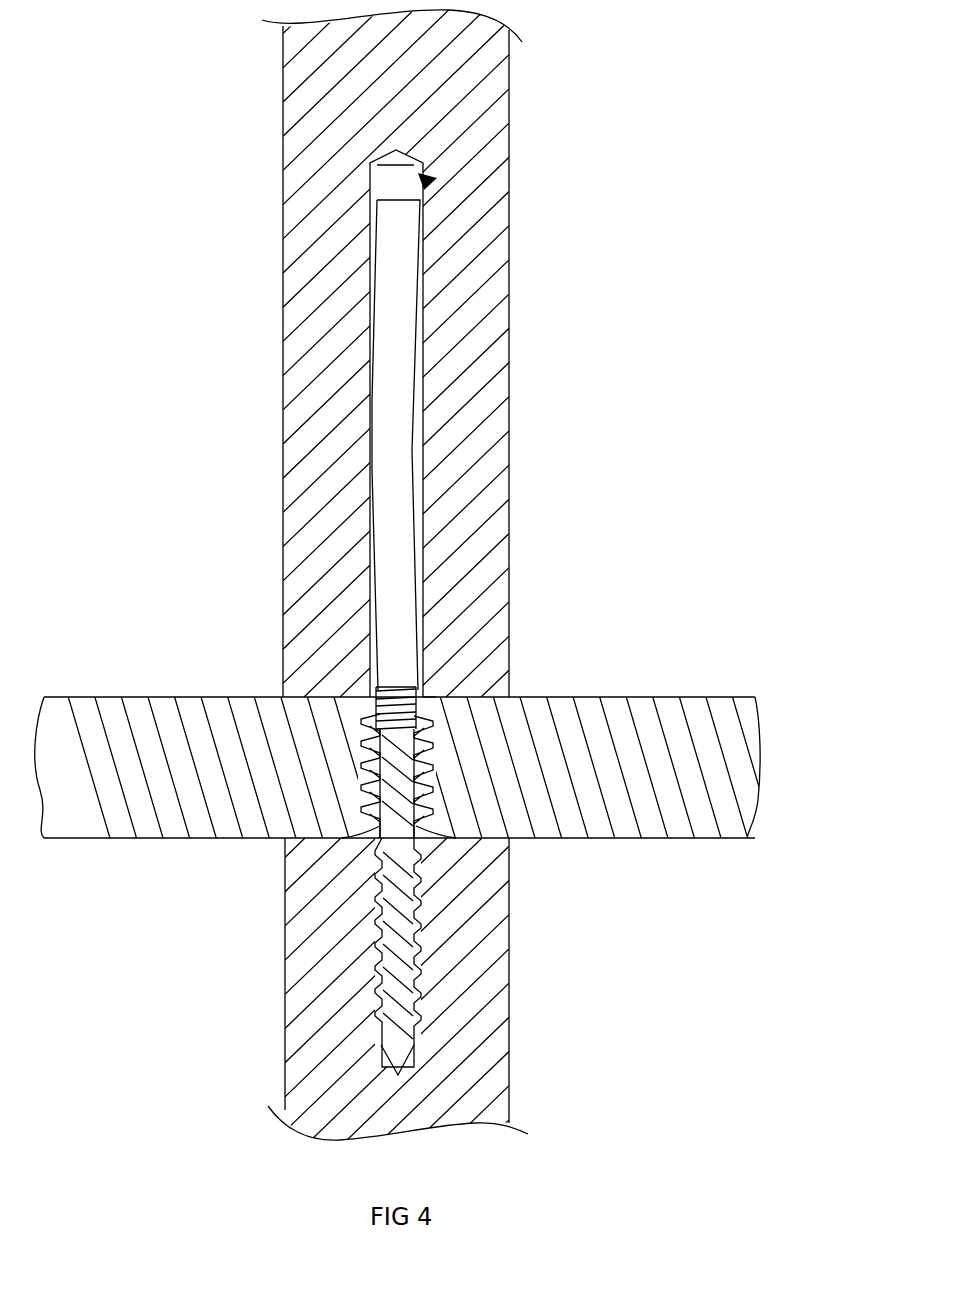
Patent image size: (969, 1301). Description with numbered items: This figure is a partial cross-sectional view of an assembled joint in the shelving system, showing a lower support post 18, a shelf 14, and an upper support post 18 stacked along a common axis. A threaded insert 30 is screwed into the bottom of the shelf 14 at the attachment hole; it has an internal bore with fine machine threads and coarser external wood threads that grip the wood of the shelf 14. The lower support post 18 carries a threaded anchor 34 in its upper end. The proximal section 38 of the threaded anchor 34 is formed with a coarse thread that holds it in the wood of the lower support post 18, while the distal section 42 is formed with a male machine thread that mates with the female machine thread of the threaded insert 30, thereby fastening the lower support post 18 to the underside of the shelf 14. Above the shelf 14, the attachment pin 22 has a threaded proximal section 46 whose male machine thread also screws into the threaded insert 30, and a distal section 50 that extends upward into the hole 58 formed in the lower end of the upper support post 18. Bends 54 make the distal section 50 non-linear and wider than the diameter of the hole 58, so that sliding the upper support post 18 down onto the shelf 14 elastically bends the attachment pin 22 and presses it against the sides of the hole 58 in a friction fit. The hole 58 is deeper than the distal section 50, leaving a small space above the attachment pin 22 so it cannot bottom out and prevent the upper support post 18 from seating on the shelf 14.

The shelf 14 is at (712, 772).
The support post 18 is at (483, 402).
The attachment pin 22 is at (396, 528).
The threaded insert 30 is at (431, 758).
The threaded anchor 34 is at (410, 956).
The proximal section 38 is at (394, 970).
The distal section 42 is at (393, 805).
The threaded proximal section 46 is at (425, 696).
The distal section 50 is at (406, 445).
The bends 54 is at (386, 440).
The hole 58 is at (430, 180).